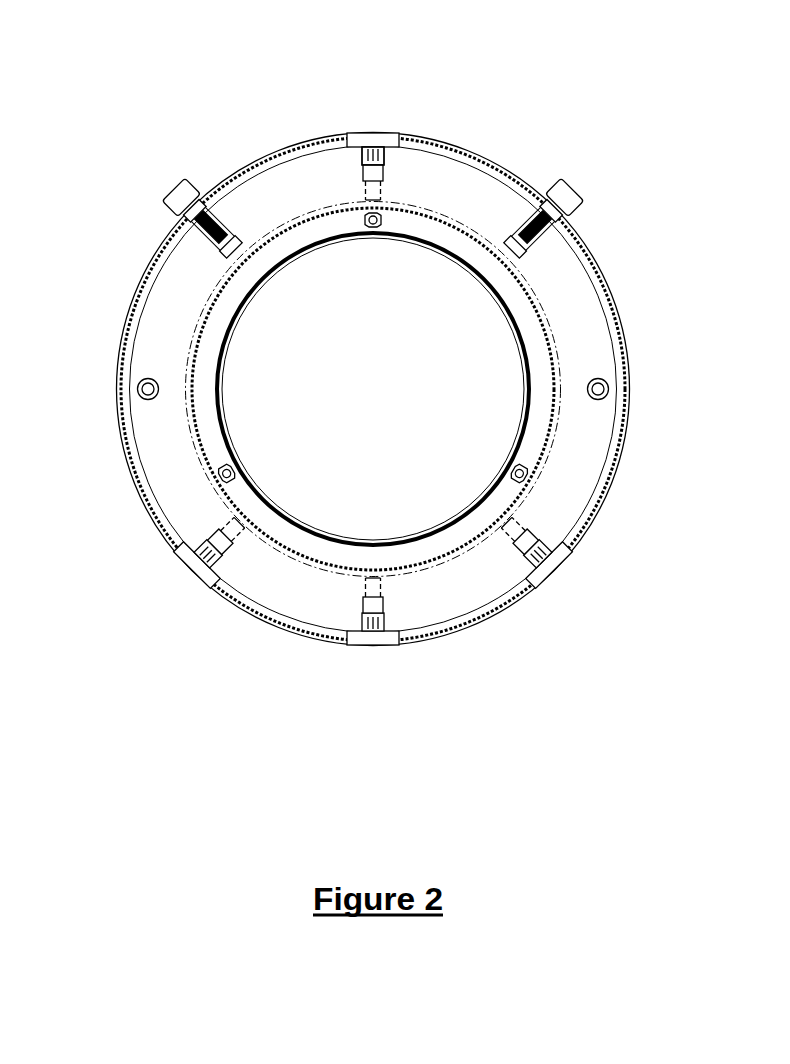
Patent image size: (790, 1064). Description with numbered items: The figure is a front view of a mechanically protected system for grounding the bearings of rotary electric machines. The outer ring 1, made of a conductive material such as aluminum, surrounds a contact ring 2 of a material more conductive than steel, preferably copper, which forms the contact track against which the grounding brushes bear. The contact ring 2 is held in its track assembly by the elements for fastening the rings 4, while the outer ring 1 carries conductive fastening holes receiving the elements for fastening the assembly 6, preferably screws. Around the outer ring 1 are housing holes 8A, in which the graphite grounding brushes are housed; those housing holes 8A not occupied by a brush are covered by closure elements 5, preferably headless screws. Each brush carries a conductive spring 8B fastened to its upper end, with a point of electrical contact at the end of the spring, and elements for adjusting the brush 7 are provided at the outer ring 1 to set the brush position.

The outer ring 1 is at (468, 190).
The contact ring 2 is at (208, 432).
The elements for fastening the rings 4 is at (528, 477).
The closure elements 5 is at (362, 163).
The elements for fastening the assembly 6 is at (606, 382).
The elements for adjusting the brush 7 is at (568, 197).
The housing holes 8A is at (368, 150).
The conductive spring 8B is at (198, 222).